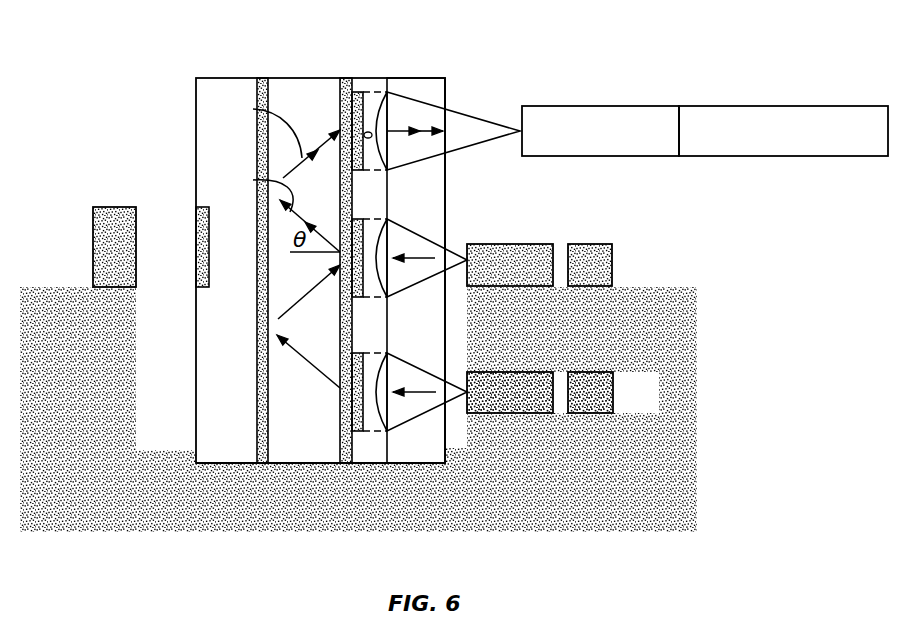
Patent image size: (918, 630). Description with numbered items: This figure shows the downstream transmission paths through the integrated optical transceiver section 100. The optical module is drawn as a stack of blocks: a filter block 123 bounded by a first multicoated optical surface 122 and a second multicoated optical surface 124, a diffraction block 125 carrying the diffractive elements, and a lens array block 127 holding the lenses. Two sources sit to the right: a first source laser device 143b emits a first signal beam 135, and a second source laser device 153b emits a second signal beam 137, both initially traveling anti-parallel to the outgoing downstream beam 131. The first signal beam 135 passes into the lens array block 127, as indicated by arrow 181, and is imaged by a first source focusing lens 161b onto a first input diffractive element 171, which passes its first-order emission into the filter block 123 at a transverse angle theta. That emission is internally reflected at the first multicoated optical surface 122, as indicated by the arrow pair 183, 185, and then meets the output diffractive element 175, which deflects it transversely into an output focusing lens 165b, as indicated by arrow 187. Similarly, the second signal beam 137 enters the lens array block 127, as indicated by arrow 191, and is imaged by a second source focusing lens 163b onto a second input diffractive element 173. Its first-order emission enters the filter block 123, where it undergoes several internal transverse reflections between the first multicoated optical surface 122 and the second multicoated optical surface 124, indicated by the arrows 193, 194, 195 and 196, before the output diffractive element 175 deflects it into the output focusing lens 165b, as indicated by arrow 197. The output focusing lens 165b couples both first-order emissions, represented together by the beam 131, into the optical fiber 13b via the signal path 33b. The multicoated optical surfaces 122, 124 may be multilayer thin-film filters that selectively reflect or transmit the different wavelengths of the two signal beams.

The display system 100 is at (106, 44).
The first multicoated optical surface 122 is at (262, 78).
The second multicoated optical surface 124 is at (347, 78).
The diffraction block 125 is at (366, 78).
The lens array block 127 is at (428, 78).
The output diffractive element 175 is at (352, 78).
The first input diffractive element 171 is at (357, 217).
The second input diffractive element 173 is at (357, 465).
The beam 131 is at (462, 147).
The output focusing lens 165b is at (372, 137).
The arrow 187 is at (412, 125).
The arrow 197 is at (428, 125).
The first signal beam 135 is at (455, 262).
The first source laser device 143b is at (530, 262).
The first source focusing lens 161b is at (380, 300).
The arrow 181 is at (412, 258).
The second signal beam 137 is at (457, 385).
The second source laser device 153b is at (508, 408).
The second source focusing lens 163b is at (388, 445).
The arrow 191 is at (415, 390).
The arrow 196 is at (328, 137).
The arrow 185 is at (256, 109).
The arrow 183 is at (313, 235).
The arrow 195 is at (256, 180).
The arrow 194 is at (313, 293).
The arrow 193 is at (338, 388).
The filter block 123 is at (300, 465).
The signal path 33b is at (600, 106).
The optical fiber 13b is at (773, 106).